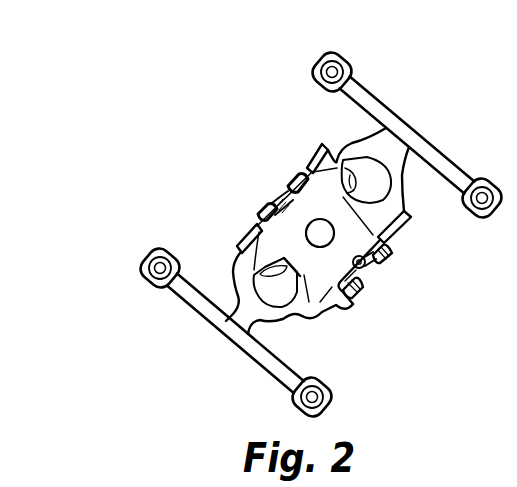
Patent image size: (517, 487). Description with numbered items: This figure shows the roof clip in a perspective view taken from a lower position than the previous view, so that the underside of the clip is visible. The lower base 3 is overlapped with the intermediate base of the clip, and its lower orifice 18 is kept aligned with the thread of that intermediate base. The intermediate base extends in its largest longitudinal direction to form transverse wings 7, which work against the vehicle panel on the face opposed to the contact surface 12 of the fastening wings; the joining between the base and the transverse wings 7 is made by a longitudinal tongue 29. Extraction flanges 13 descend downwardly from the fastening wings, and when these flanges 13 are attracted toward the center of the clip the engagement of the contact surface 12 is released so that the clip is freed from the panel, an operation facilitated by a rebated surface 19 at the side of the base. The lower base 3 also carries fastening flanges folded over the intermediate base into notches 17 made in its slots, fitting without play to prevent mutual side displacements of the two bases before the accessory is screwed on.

The lower base 3 is at (308, 190).
The transverse wings 7 is at (450, 162).
The contact surface 12 is at (355, 292).
The extraction flanges 13 is at (362, 268).
The notches 17 is at (293, 273).
The lower orifice 18 is at (318, 237).
The rebated surface 19 is at (374, 258).
The longitudinal tongue 29 is at (405, 133).